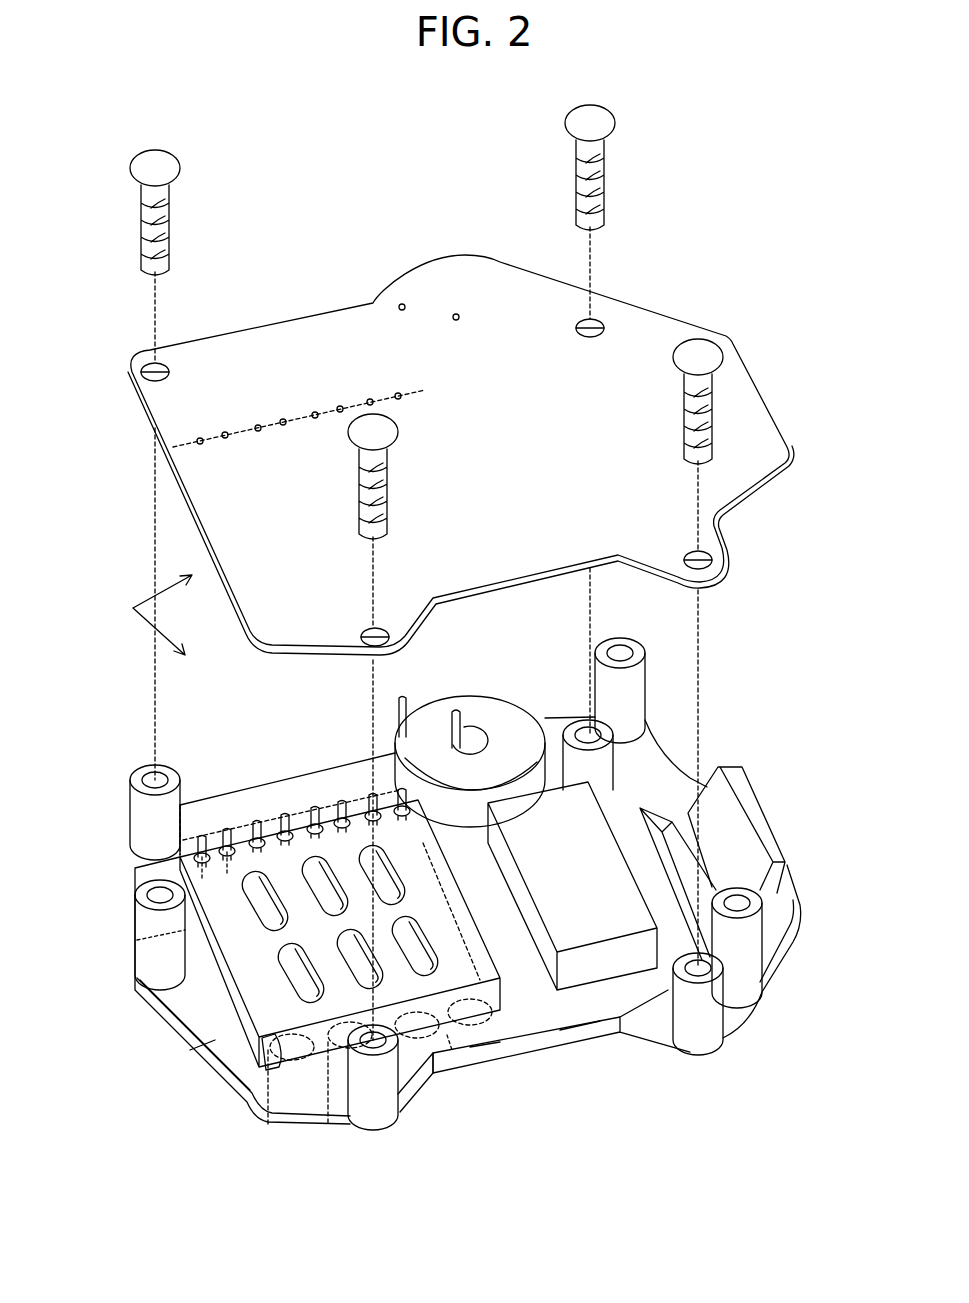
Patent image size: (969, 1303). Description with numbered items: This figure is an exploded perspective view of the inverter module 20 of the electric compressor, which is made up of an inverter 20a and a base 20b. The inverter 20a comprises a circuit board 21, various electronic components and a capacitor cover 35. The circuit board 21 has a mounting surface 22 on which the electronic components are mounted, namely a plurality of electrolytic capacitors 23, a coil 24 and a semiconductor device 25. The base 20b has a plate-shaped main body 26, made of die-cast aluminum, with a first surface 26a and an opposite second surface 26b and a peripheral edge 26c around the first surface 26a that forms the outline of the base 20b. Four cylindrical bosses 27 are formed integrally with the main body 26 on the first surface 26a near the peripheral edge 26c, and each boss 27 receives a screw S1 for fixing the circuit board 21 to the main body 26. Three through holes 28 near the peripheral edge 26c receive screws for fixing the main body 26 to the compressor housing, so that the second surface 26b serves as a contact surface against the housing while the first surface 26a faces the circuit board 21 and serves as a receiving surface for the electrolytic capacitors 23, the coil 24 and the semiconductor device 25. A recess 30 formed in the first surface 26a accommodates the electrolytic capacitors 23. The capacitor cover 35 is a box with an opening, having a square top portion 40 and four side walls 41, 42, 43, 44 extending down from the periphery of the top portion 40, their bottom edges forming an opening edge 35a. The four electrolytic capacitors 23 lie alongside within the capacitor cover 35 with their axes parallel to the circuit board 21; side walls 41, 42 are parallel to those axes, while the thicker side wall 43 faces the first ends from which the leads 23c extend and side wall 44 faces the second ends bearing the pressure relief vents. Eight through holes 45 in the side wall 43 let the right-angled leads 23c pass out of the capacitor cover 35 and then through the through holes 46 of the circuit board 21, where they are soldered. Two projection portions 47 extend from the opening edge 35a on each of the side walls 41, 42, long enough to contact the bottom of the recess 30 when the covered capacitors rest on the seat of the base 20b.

The inverter module 20 is at (338, 171).
The screw S1 is at (172, 161).
The circuit board 21 is at (470, 455).
The mounting surface 22 is at (628, 312).
The through holes 46 is at (260, 433).
The inverter 20a is at (140, 615).
The base 20b is at (739, 757).
The coil 24 is at (520, 725).
The semiconductor device 25 is at (612, 812).
The main body 26 is at (490, 920).
The first surface 26a is at (490, 1063).
The second surface 26b is at (478, 1065).
The peripheral edge 26c is at (577, 1025).
The cylindrical bosses 27 is at (131, 803).
The through holes 28 is at (135, 908).
The top portion 40 is at (348, 933).
The side wall 42 is at (418, 873).
The side wall 43 is at (258, 820).
The capacitor cover 35 is at (318, 800).
The opening edge 35a is at (231, 1082).
The through holes 45 is at (178, 852).
The projection portions 47 is at (135, 945).
The side wall 41 is at (168, 1000).
The electrolytic capacitors 23 is at (270, 1100).
The leads 23c is at (228, 830).
The side wall 44 is at (325, 1100).
The recess 30 is at (447, 1035).